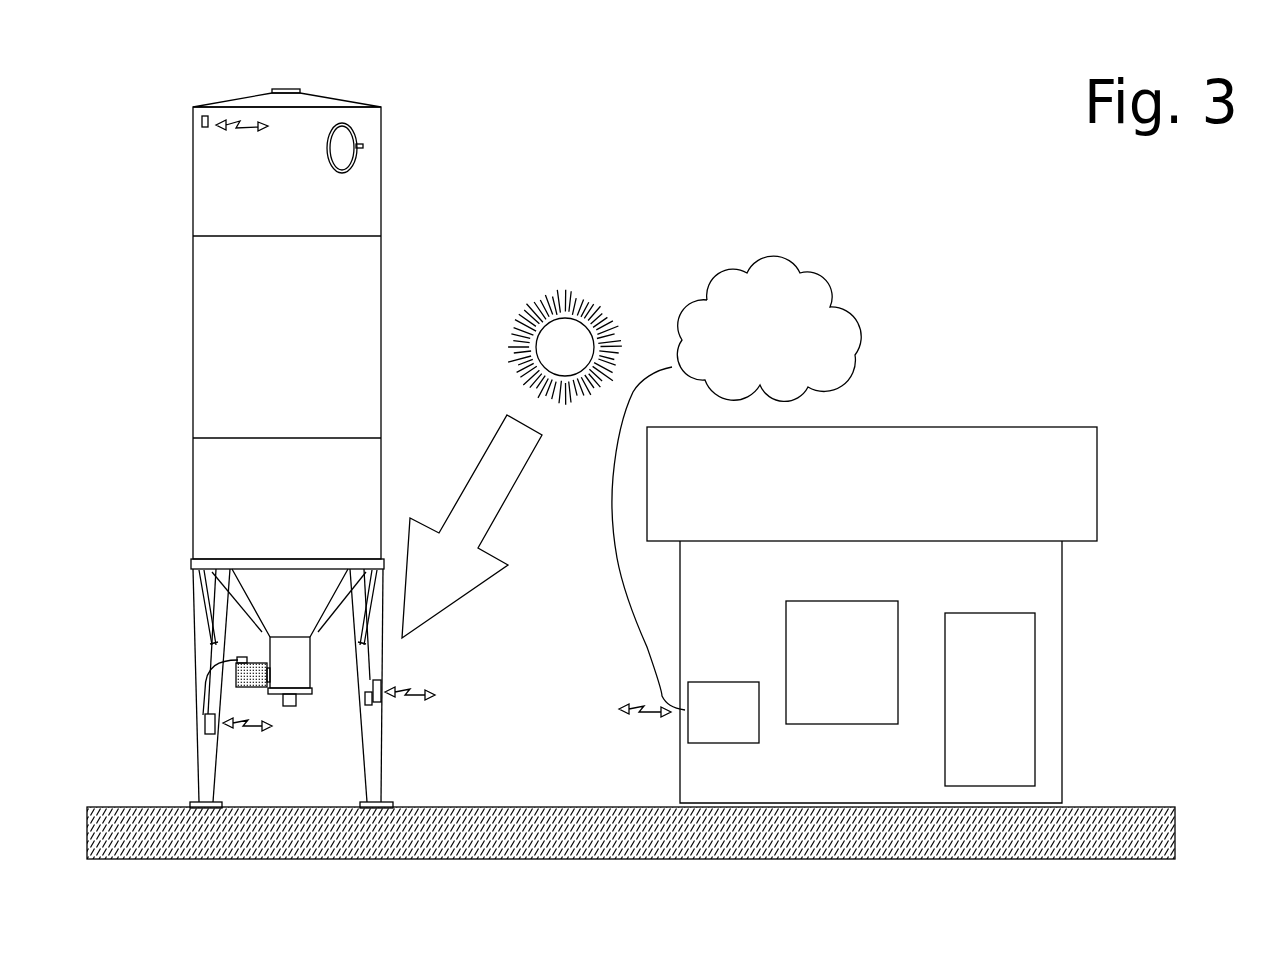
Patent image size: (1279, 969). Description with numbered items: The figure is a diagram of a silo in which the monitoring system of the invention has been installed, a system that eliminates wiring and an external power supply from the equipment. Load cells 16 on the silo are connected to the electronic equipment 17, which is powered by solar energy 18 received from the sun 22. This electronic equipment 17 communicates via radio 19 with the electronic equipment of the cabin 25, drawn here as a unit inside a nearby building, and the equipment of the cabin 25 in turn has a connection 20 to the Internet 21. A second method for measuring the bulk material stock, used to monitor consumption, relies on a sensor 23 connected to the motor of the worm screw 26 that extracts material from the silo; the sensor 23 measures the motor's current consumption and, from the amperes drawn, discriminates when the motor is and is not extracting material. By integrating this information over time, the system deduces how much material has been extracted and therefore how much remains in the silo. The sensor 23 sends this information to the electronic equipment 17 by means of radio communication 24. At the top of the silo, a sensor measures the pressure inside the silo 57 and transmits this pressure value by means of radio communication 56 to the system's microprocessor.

The load cells 16 is at (365, 695).
The electronic equipment 17 is at (382, 703).
The solar energy 18 is at (472, 526).
The radio 19 is at (413, 690).
The connection 20 is at (617, 558).
The Internet 21 is at (769, 328).
The sun 22 is at (498, 350).
The sensor 23 is at (205, 720).
The radio communication 24 is at (248, 733).
The electronic equipment of the cabin 25 is at (727, 746).
The motor of the worm screw 26 is at (236, 670).
The radio communication 56 is at (238, 128).
The pressure sensor 57 is at (208, 132).